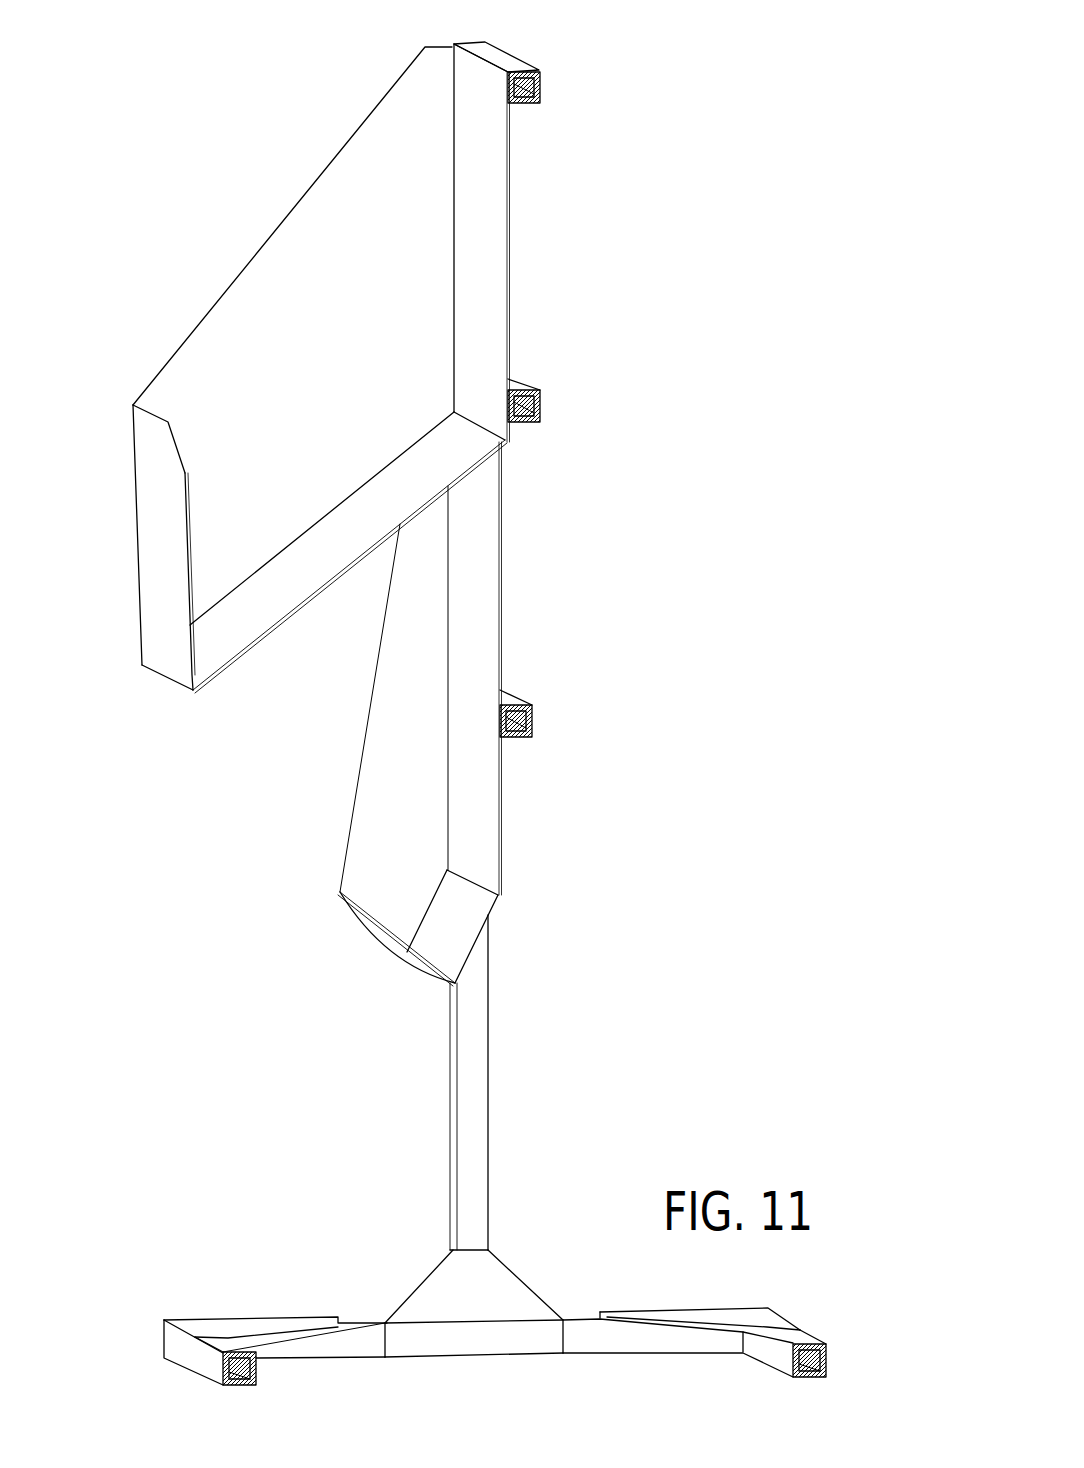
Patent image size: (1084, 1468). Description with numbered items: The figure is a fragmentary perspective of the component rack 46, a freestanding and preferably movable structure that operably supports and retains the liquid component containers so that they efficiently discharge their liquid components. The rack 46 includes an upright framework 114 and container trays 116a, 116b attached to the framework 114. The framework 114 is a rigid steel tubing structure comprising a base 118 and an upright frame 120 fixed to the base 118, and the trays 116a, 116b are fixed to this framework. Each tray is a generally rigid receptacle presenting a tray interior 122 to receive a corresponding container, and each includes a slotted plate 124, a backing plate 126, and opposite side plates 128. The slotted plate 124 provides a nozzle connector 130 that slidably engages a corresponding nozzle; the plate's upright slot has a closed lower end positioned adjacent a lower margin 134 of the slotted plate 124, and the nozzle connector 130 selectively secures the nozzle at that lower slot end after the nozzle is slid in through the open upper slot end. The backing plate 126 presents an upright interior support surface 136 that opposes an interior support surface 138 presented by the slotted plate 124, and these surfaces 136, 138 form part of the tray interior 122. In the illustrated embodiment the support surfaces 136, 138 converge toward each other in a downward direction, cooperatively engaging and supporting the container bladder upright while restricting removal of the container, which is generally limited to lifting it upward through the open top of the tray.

The component rack 46 is at (608, 226).
The upright framework 114 is at (478, 1134).
The container tray 116a is at (490, 208).
The container tray 116b is at (484, 565).
The base 118 is at (304, 1338).
The upright frame 120 is at (478, 1060).
The tray interior 122 is at (315, 532).
The slotted plate 124 is at (163, 607).
The backing plate 126 is at (295, 607).
The side plates 128 is at (258, 288).
The nozzle connector 130 is at (183, 540).
The lower margin 134 is at (172, 680).
The interior support surface 136 is at (485, 149).
The interior support surface 138 is at (187, 497).